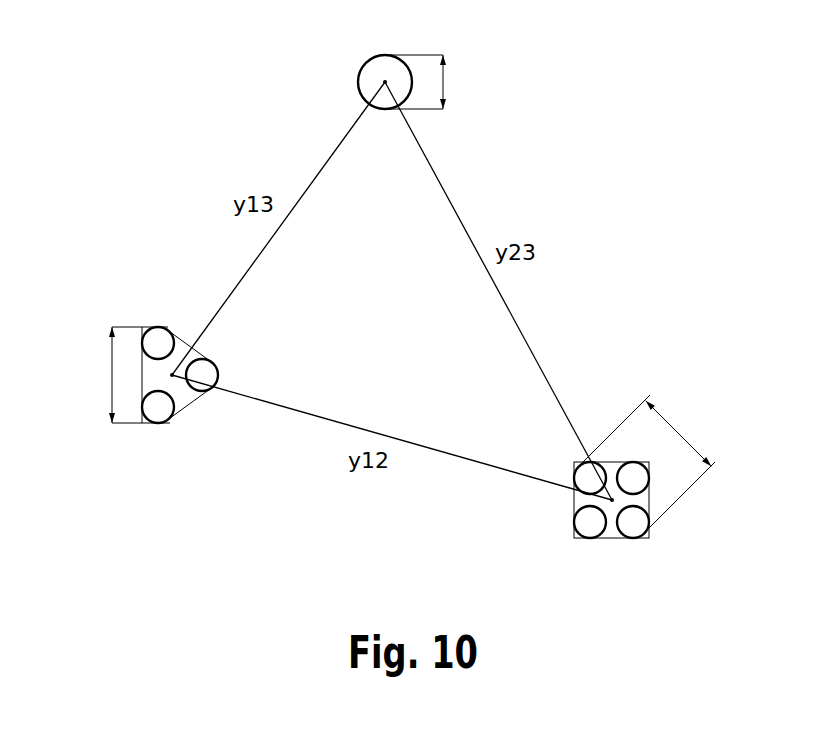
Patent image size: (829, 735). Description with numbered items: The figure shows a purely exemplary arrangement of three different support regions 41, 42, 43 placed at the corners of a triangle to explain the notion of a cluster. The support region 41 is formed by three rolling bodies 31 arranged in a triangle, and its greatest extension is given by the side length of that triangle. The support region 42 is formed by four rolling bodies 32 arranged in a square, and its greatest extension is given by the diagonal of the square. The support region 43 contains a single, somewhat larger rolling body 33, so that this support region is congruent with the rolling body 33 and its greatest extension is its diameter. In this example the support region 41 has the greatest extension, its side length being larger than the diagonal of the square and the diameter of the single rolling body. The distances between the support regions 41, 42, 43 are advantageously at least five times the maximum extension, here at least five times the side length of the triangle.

The rolling body 31 is at (157, 335).
The rolling body 32 is at (632, 528).
The rolling body 33 is at (382, 72).
The support region 41 is at (164, 367).
The support region 42 is at (606, 483).
The support region 43 is at (386, 66).